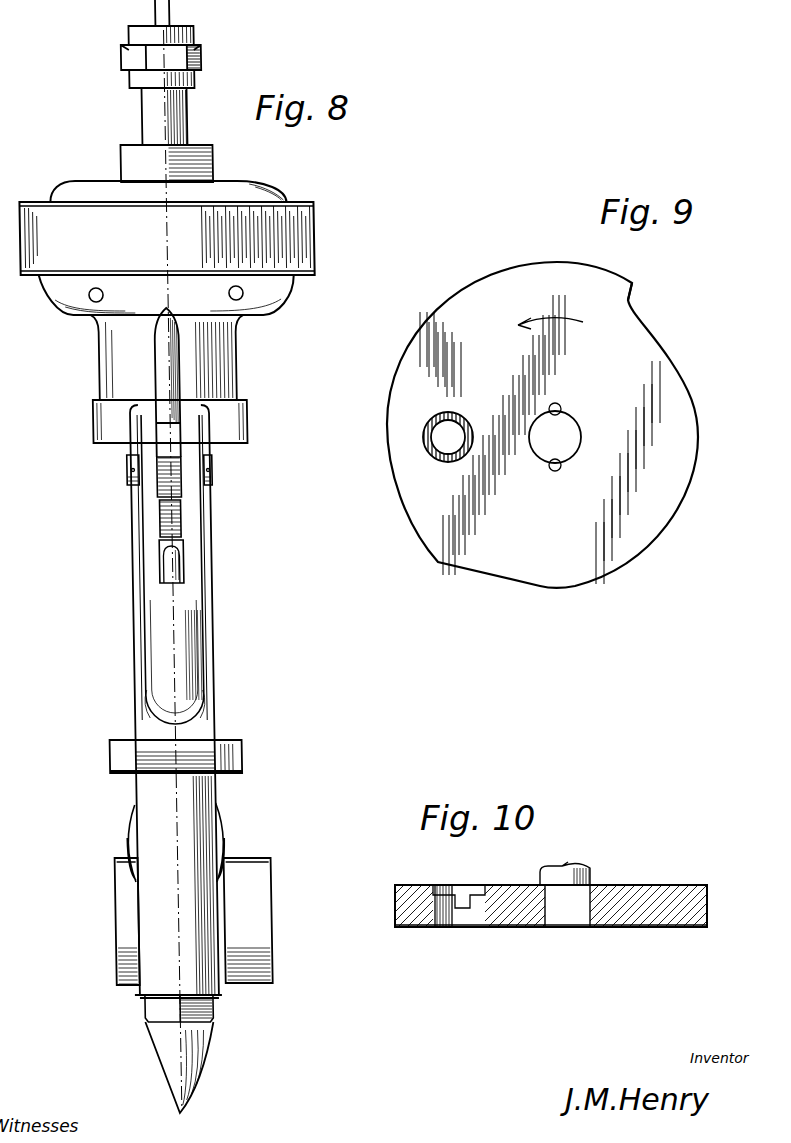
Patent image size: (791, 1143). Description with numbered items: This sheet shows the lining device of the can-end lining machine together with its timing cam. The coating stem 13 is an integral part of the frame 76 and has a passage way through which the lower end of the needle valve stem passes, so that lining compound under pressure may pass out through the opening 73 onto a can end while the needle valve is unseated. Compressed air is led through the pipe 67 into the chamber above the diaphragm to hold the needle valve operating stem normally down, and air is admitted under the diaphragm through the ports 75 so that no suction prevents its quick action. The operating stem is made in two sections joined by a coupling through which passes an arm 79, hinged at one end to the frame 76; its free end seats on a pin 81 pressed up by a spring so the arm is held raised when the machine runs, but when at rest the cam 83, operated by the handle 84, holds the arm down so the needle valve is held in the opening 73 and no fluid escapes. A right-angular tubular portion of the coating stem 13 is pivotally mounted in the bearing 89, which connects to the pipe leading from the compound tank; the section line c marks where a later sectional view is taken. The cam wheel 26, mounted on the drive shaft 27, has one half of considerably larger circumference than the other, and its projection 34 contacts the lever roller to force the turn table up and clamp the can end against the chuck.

In FIG. 8, the pipe 67 is at (152, 14).
In FIG. 8, the section line c— c is at (166, 2).
In FIG. 8, the ports 75 is at (237, 298).
In FIG. 8, the handle 84 is at (162, 352).
In FIG. 8, the cam 83 is at (159, 448).
In FIG. 8, the arm 79 is at (158, 517).
In FIG. 8, the pin 81 is at (162, 562).
In FIG. 8, the frame 76 is at (176, 623).
In FIG. 8, the coating stem 13 is at (191, 830).
In FIG. 8, the bearing 89 is at (240, 943).
In FIG. 8, the opening 73 is at (195, 1064).
In FIG. 9, the cam wheel 26 is at (667, 383).
In FIG. 10, the cam wheel 26 is at (676, 897).
In FIG. 9, the projection 34 is at (620, 293).
In FIG. 9, the drive shaft 27 is at (567, 449).